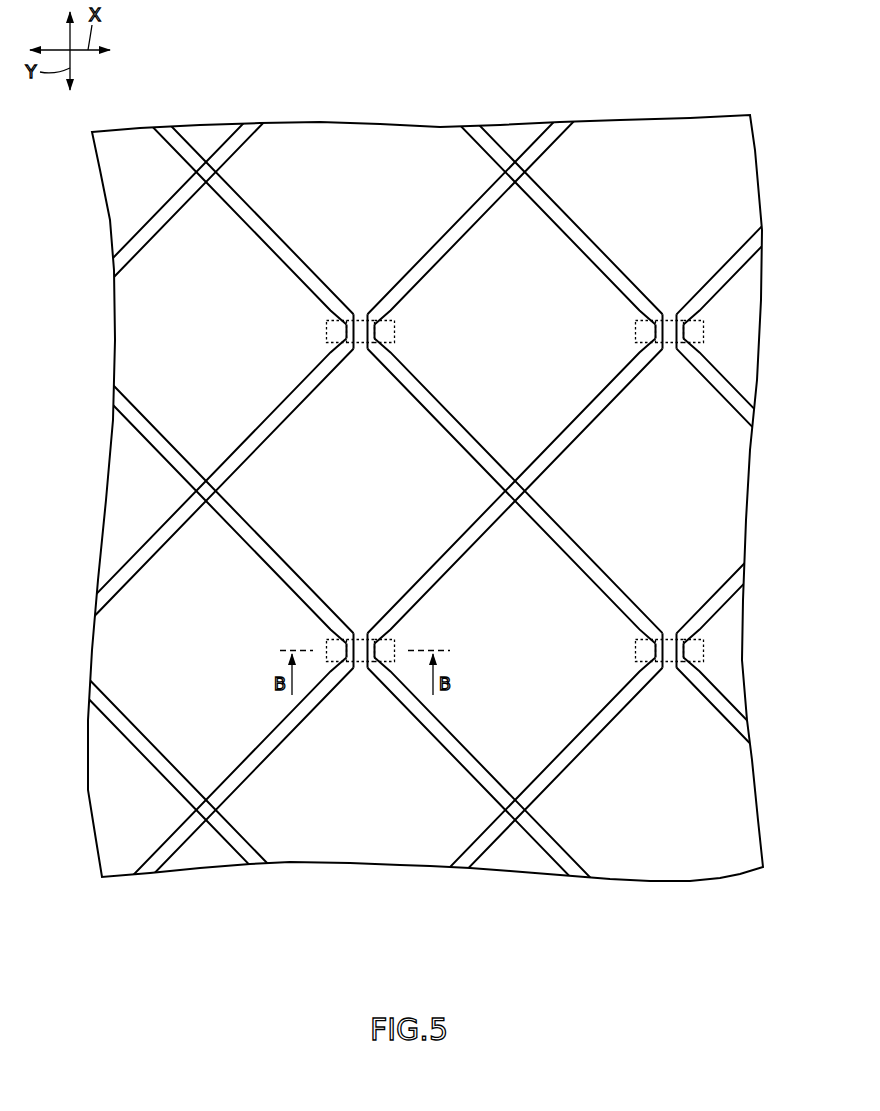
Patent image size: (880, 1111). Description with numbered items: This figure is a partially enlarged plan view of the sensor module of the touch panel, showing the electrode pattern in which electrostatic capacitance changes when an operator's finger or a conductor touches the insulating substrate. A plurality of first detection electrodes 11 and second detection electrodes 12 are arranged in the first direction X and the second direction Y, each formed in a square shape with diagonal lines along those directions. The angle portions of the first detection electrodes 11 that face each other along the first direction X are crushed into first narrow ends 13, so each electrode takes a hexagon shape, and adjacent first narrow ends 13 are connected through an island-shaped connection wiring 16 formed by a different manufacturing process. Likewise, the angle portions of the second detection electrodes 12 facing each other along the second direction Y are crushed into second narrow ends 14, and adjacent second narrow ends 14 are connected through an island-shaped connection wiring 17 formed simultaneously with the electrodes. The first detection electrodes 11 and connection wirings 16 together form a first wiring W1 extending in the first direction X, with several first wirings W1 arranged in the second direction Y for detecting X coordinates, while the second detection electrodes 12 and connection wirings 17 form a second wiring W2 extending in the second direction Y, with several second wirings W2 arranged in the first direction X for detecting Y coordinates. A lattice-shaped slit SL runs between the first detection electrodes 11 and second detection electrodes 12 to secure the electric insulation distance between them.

The first detection electrode 11 is at (285, 252).
The second detection electrode 12 is at (151, 434).
The first narrow end 13 is at (400, 320).
The second narrow end 14 is at (358, 310).
The connection wiring 16 is at (385, 647).
The connection wiring 17 is at (364, 665).
The first wiring W1 is at (98, 312).
The second wiring W2 is at (325, 868).
The slit SL is at (468, 871).